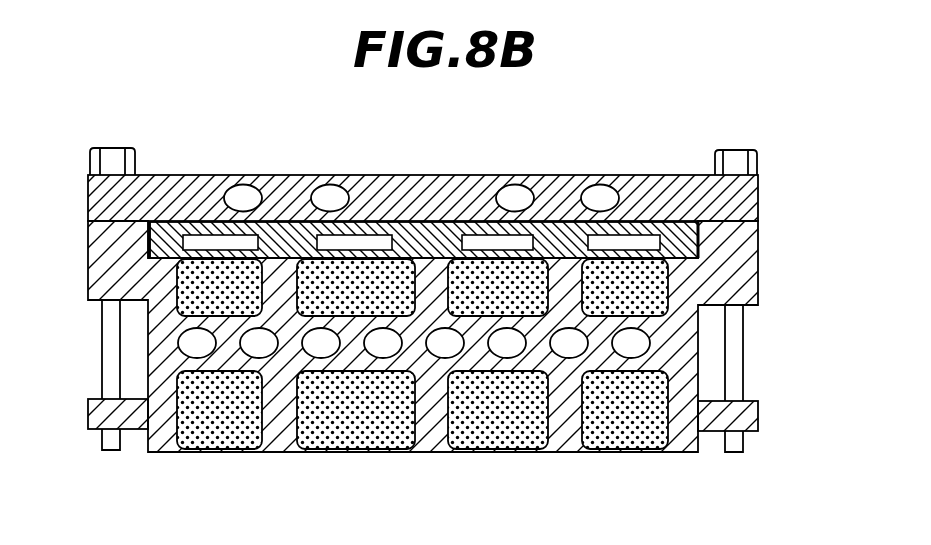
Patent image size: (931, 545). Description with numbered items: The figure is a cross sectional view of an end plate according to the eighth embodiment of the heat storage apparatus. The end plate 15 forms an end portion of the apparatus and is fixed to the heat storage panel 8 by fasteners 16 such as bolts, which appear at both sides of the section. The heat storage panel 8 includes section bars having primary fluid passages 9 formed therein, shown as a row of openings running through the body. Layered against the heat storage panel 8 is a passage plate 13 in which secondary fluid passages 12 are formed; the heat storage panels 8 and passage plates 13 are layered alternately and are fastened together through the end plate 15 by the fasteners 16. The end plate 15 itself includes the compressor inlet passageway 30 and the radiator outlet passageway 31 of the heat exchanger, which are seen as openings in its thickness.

The heat storage panel 8 is at (760, 263).
The primary fluid passage 9 is at (380, 350).
The secondary fluid passage 12 is at (623, 242).
The passage plate 13 is at (553, 237).
The end plate 15 is at (465, 177).
The fastener 16 is at (743, 352).
The compressor inlet passageway 30 is at (243, 192).
The radiator outlet passageway 31 is at (335, 192).